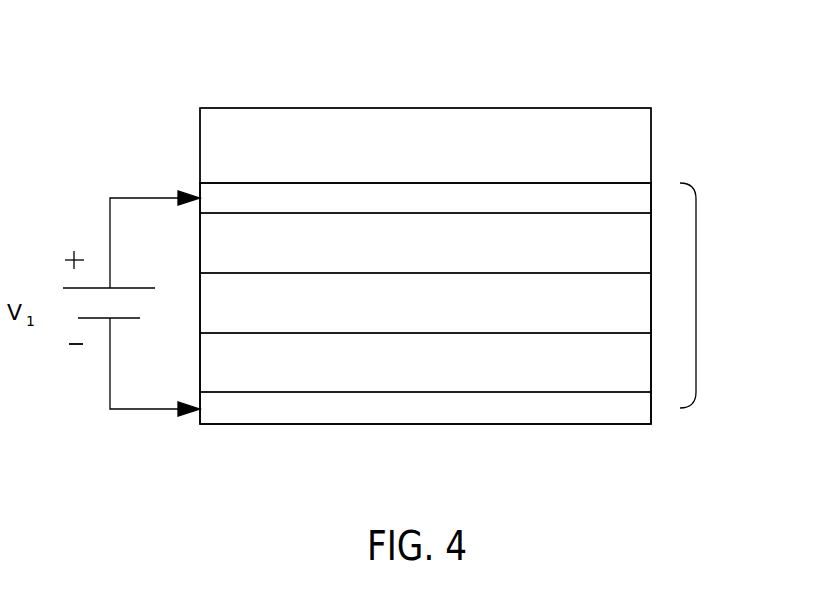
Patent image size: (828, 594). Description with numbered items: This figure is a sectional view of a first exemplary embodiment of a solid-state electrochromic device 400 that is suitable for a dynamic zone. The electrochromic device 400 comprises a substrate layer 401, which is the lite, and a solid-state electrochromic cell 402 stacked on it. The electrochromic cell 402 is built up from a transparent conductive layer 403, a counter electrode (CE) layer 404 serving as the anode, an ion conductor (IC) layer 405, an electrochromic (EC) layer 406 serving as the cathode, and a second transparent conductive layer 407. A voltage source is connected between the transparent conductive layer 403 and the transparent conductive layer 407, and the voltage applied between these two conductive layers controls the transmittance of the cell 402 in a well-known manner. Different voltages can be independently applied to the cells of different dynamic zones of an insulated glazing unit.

The solid-state electrochromic device 400 is at (178, 73).
The substrate layer 401 is at (605, 153).
The solid-state electrochromic cell 402 is at (696, 303).
The transparent conductive layer 403 is at (425, 198).
The counter electrode (CE) layer 404 is at (425, 243).
The ion conductor (IC) layer 405 is at (425, 303).
The electrochromic (EC) layer 406 is at (425, 362).
The transparent conductive layer 407 is at (425, 408).